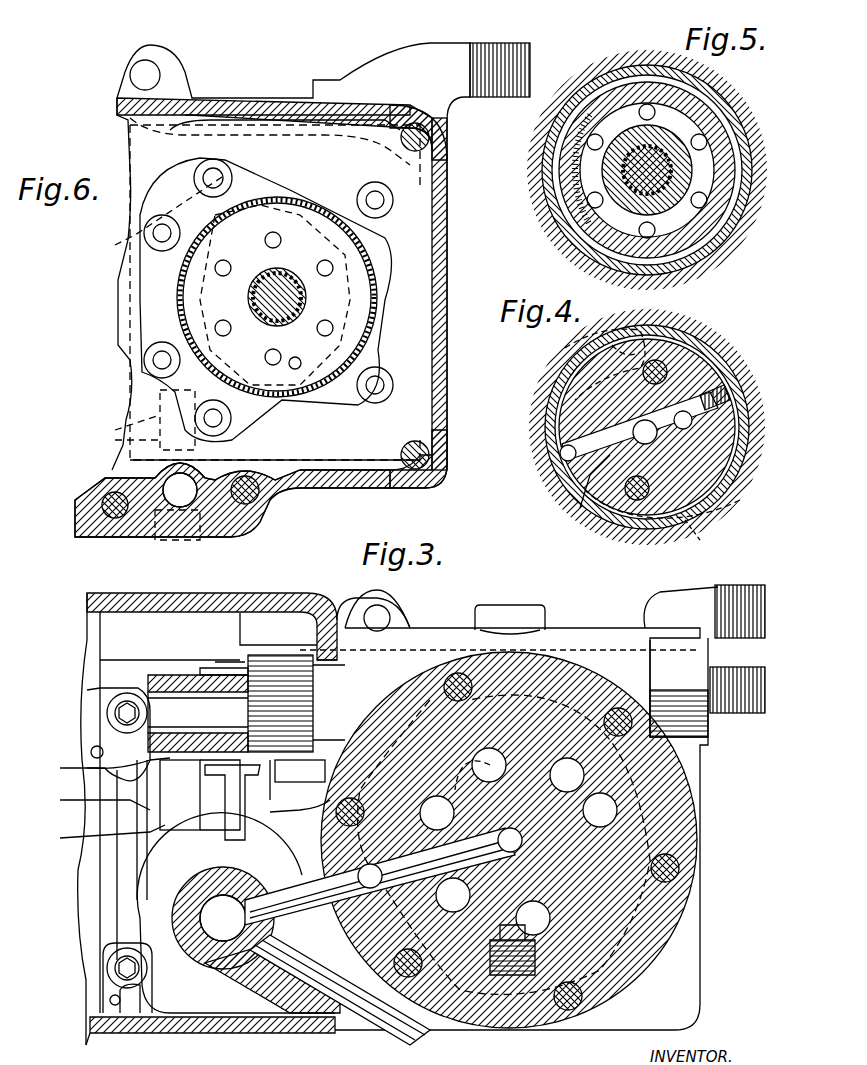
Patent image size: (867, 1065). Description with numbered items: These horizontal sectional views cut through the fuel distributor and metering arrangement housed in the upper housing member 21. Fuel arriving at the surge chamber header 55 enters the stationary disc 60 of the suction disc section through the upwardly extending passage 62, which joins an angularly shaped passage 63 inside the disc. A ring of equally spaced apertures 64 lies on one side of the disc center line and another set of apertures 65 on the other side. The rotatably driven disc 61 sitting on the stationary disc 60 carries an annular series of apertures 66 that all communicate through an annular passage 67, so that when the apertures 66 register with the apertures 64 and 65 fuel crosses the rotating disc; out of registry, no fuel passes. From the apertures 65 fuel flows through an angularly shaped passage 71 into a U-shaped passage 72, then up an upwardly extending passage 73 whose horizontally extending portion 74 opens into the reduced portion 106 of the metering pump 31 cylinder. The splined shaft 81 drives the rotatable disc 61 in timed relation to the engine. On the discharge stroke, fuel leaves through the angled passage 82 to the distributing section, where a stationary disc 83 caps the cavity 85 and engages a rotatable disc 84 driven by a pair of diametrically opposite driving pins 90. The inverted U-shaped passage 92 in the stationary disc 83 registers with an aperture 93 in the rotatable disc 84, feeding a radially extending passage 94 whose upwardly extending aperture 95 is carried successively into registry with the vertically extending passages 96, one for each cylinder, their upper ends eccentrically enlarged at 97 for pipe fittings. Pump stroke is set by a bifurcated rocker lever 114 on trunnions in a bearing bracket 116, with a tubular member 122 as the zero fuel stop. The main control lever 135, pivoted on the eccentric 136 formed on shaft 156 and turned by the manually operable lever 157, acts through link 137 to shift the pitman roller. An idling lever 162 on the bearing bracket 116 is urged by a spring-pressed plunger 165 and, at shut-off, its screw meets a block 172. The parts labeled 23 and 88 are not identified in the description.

In FIG. 6, the upper housing member 21 is at (445, 385).
In FIG. 5, the upper housing member 21 is at (620, 70).
In FIG. 4, the upper housing member 21 is at (670, 328).
In FIG. 3, the upper housing member 21 is at (205, 1030).
In FIG. 6, the inlet pipe fitting 23 is at (528, 45).
In FIG. 3, the inlet pipe fitting 23 is at (745, 585).
In FIG. 3, the metering pump 31 is at (155, 920).
In FIG. 6, the surge chamber header 55 is at (130, 130).
In FIG. 6, the stationary disc 60 is at (345, 395).
In FIG. 5, the rotatably driven disc 61 is at (565, 162).
In FIG. 6, the upwardly extending passage 62 is at (118, 222).
In FIG. 6, the angularly shaped passage 63 is at (293, 236).
In FIG. 6, the apertures 64 is at (265, 240).
In FIG. 6, the apertures 65 is at (215, 328).
In FIG. 5, the apertures 66 is at (703, 148).
In FIG. 5, the annular passage 67 is at (570, 195).
In FIG. 6, the angularly shaped passage 71 is at (304, 370).
In FIG. 6, the U-shaped passage 72 is at (115, 430).
In FIG. 6, the upwardly extending passage 73 is at (180, 495).
In FIG. 3, the horizontally extending portion 74 is at (330, 1025).
In FIG. 6, the spline shaft 81 is at (302, 297).
In FIG. 5, the spline shaft 81 is at (660, 180).
In FIG. 3, the passage 82 is at (275, 880).
In FIG. 3, the stationary disc 83 is at (660, 908).
In FIG. 4, the rotatable disc 84 is at (568, 432).
In FIG. 4, the cavity 85 is at (705, 370).
In FIG. 6, the gear ring 88 is at (372, 272).
In FIG. 5, the gear ring 88 is at (735, 135).
In FIG. 4, the gear ring 88 is at (738, 480).
In FIG. 4, the driving pins 90 is at (680, 360).
In FIG. 3, the inverted U-shaped passage 92 is at (474, 788).
In FIG. 4, the aperture 93 is at (635, 428).
In FIG. 4, the radially extending passage 94 is at (578, 508).
In FIG. 4, the upwardly extending aperture 95 is at (555, 455).
In FIG. 4, the vertically extending passages 96 is at (640, 340).
In FIG. 3, the vertically extending passages 96 is at (506, 762).
In FIG. 4, the eccentrically enlarged portions 97 is at (701, 472).
In FIG. 3, the eccentrically enlarged portions 97 is at (590, 880).
In FIG. 3, the reduced portion 106 is at (205, 900).
In FIG. 3, the bifurcated rocker lever 114 is at (96, 835).
In FIG. 3, the bearing bracket 116 is at (174, 810).
In FIG. 3, the tubular member 122 is at (185, 825).
In FIG. 3, the main control lever 135 is at (92, 766).
In FIG. 3, the eccentric 136 is at (172, 685).
In FIG. 3, the link 137 is at (240, 815).
In FIG. 3, the shaft 156 is at (342, 620).
In FIG. 3, the manually operable lever 157 is at (738, 716).
In FIG. 3, the idling lever 162 is at (268, 750).
In FIG. 3, the spring-pressed plunger 165 is at (220, 668).
In FIG. 3, the block 172 is at (297, 780).